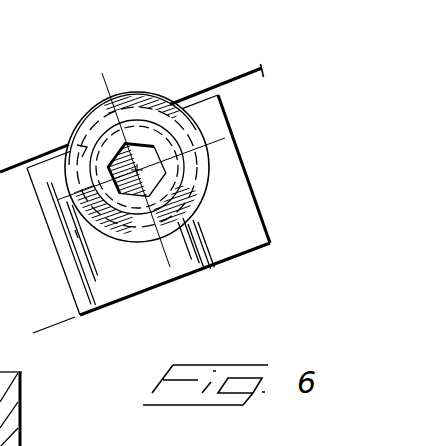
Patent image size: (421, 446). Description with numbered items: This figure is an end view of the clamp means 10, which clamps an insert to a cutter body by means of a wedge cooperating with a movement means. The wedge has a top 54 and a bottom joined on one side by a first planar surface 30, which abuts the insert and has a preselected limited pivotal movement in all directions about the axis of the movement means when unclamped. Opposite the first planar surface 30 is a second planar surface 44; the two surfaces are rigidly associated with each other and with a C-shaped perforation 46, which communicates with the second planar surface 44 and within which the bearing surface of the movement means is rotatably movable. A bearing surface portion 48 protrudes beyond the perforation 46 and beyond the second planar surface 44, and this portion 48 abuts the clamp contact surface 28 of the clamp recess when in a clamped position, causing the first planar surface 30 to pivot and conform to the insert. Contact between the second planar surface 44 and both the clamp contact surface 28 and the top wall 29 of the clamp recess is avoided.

The clamp means 10 is at (280, 148).
The clamp contact surface 28 is at (116, 130).
The top wall 29 is at (5, 164).
The first planar surface 30 is at (217, 268).
The second planar surface 44 is at (220, 102).
The C-shaped perforation 46 is at (193, 199).
The bearing surface portion 48 is at (137, 179).
The top 54 is at (250, 234).